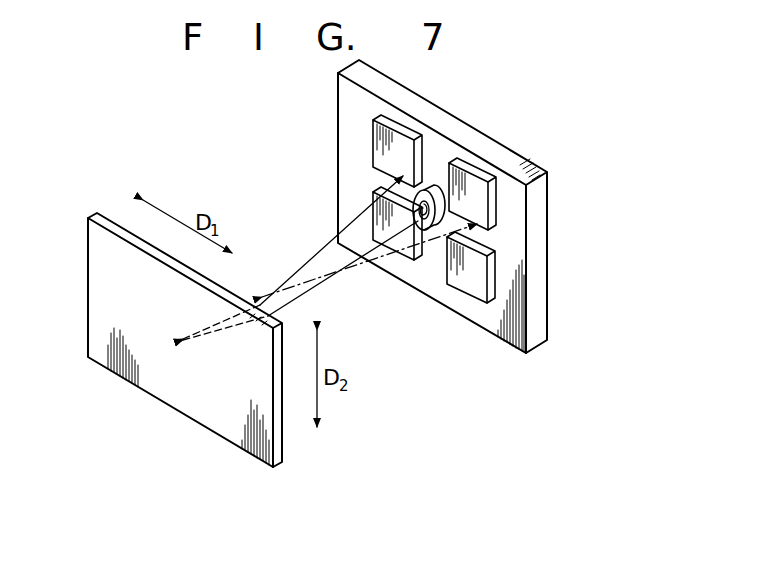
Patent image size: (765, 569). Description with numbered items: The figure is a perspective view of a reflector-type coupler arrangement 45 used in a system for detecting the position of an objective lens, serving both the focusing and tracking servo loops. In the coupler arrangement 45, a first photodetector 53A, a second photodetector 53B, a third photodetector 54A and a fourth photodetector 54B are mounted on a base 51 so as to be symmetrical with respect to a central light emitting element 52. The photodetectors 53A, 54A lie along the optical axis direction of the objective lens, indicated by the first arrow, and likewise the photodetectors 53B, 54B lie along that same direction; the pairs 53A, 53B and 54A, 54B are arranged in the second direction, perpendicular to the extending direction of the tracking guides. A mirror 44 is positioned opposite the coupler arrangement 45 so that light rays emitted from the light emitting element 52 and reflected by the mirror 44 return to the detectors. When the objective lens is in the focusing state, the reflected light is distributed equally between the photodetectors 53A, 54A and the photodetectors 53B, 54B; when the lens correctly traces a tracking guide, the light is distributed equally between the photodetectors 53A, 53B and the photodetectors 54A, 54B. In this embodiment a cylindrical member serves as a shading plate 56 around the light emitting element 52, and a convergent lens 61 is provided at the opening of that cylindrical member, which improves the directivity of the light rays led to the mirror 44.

The mirror 44 is at (98, 324).
The coupler arrangement 45 is at (474, 206).
The base 51 is at (513, 158).
The light emitting element 52 is at (440, 220).
The first photodetector 53A is at (393, 153).
The second photodetector 53B is at (395, 213).
The third photodetector 54A is at (476, 195).
The fourth photodetector 54B is at (476, 273).
The shading plate 56 is at (424, 260).
The convergent lens 61 is at (428, 237).